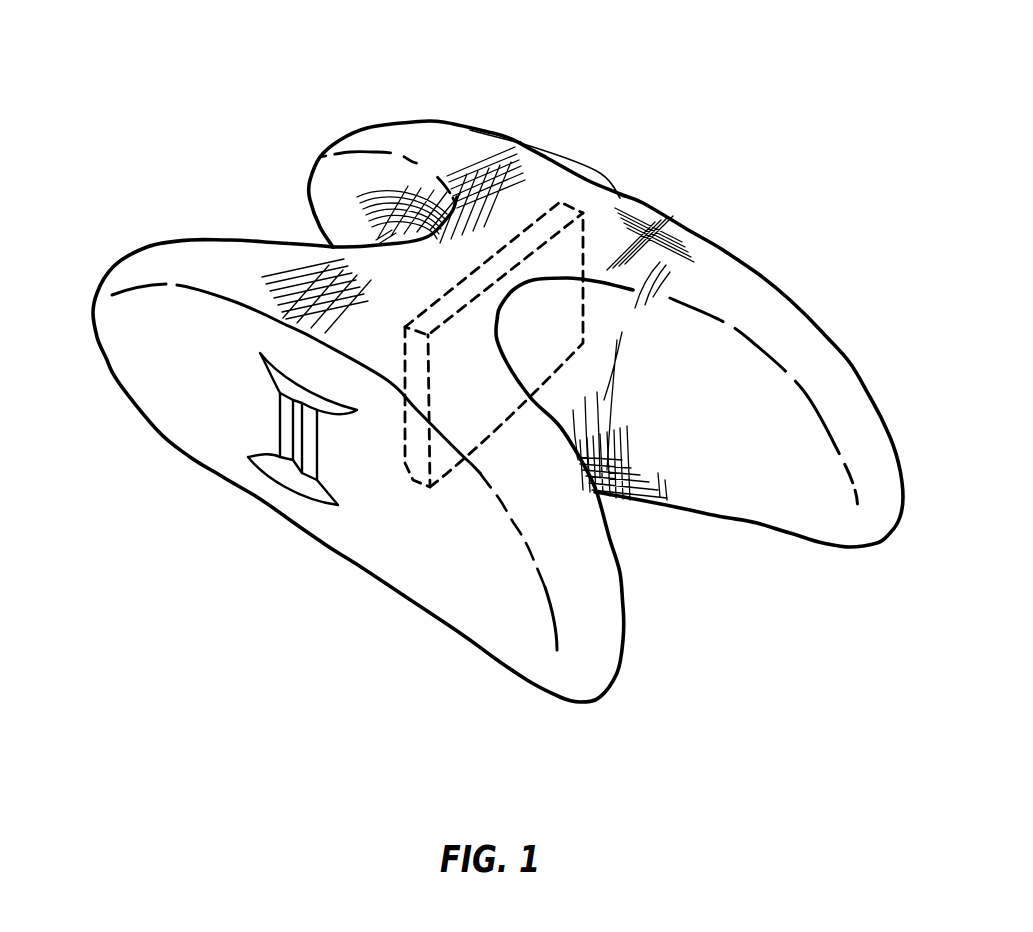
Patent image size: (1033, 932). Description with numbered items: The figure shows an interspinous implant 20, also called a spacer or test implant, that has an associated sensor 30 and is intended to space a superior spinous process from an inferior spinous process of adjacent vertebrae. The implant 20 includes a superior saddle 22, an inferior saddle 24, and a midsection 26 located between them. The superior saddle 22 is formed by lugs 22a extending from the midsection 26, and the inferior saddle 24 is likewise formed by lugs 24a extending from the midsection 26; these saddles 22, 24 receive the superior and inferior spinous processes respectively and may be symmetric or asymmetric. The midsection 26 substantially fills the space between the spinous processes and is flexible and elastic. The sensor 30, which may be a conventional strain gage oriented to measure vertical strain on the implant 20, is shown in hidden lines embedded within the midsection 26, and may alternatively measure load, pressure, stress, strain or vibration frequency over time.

The interspinous implant 20 is at (722, 77).
The superior saddle 22 is at (256, 210).
The lugs 22a is at (403, 140).
The inferior saddle 24 is at (705, 590).
The lugs 24a is at (843, 397).
The midsection 26 is at (643, 202).
The sensor 30 is at (403, 470).